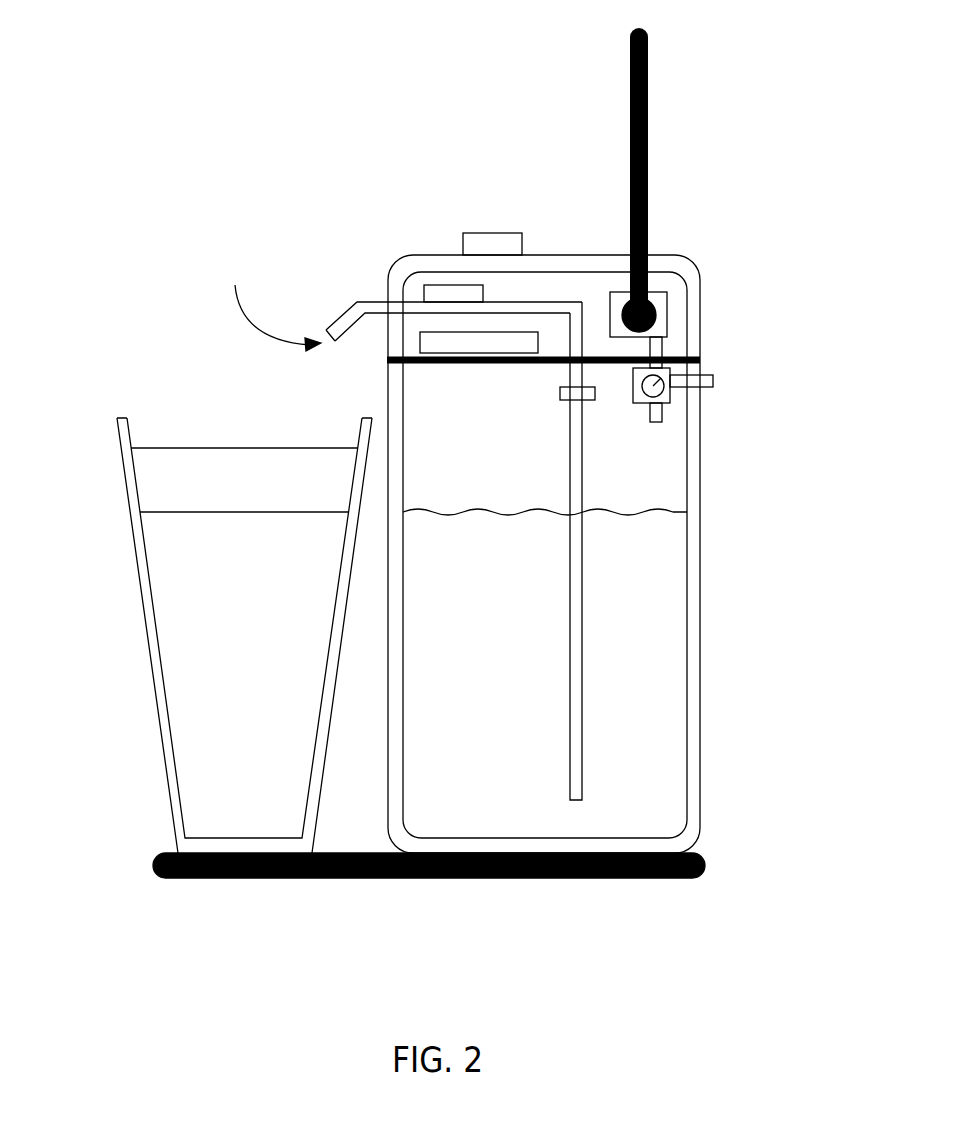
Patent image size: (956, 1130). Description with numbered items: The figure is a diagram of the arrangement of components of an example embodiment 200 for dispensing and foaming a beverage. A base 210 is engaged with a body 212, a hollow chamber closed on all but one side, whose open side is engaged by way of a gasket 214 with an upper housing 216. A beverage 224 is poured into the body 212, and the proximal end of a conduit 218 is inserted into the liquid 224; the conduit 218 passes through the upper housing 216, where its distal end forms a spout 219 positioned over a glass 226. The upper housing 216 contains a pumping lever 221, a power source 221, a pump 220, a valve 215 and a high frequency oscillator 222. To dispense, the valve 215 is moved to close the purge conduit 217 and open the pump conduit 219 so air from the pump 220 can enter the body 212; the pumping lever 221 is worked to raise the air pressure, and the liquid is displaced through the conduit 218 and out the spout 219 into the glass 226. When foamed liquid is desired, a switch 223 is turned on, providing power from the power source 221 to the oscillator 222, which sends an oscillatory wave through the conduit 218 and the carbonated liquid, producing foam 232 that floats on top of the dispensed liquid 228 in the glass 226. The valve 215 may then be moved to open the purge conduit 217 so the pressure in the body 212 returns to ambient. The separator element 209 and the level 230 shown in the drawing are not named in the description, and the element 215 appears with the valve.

The example embodiment 200 is at (140, 39).
The separator plate 209 is at (655, 363).
The base 210 is at (705, 862).
The body 212 is at (695, 548).
The gasket 214 is at (702, 358).
The valve 215 is at (668, 398).
The upper housing 216 is at (692, 755).
The purge conduit 217 is at (708, 383).
The conduit 218 is at (378, 308).
The spout 219 is at (267, 307).
The pump 220 is at (663, 300).
The pumping lever 221 is at (649, 125).
The oscillator 222 is at (450, 293).
The switch 223 is at (493, 243).
The liquid 224 is at (598, 613).
The glass 226 is at (157, 677).
The dispensed liquid 228 is at (178, 568).
The liquid level 230 is at (627, 490).
The foam 232 is at (227, 475).